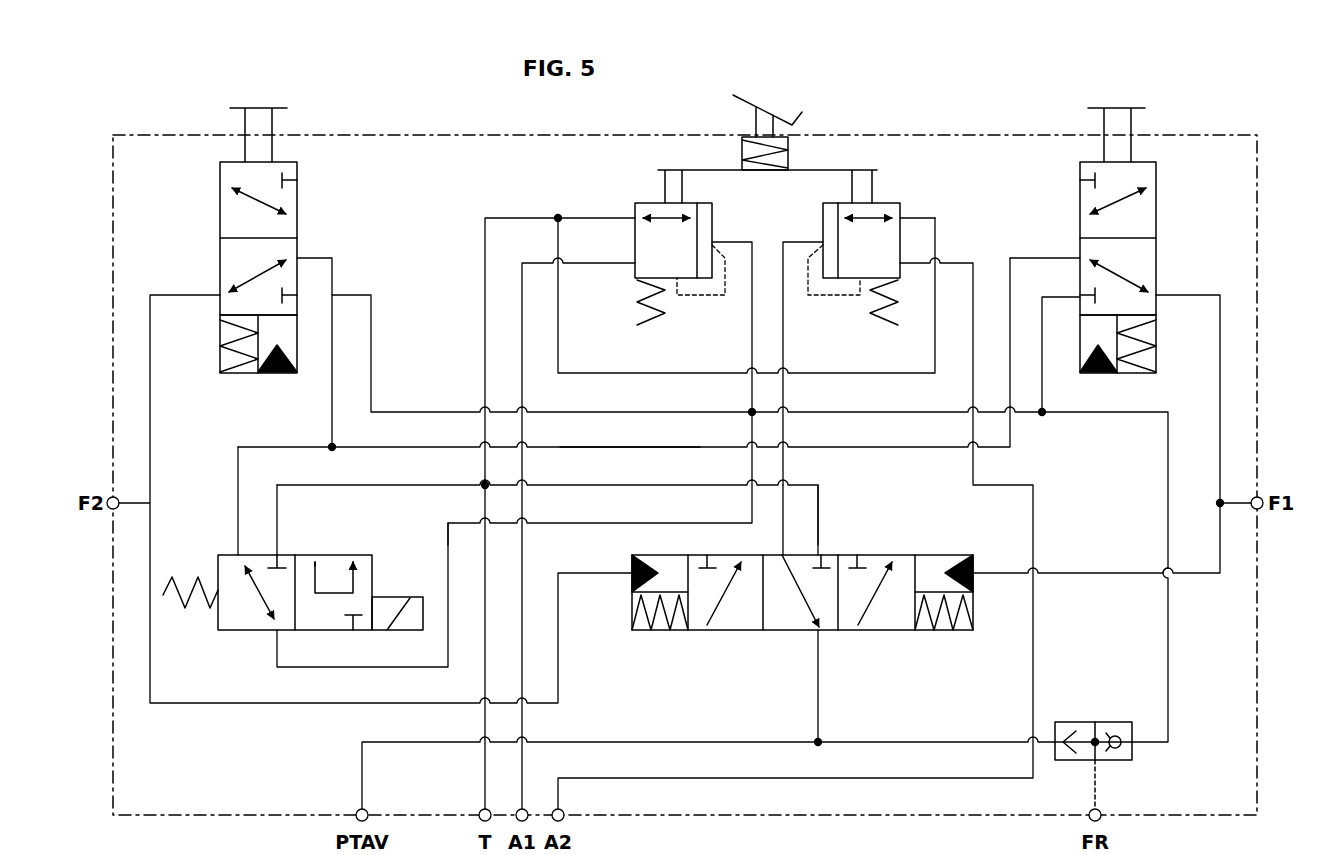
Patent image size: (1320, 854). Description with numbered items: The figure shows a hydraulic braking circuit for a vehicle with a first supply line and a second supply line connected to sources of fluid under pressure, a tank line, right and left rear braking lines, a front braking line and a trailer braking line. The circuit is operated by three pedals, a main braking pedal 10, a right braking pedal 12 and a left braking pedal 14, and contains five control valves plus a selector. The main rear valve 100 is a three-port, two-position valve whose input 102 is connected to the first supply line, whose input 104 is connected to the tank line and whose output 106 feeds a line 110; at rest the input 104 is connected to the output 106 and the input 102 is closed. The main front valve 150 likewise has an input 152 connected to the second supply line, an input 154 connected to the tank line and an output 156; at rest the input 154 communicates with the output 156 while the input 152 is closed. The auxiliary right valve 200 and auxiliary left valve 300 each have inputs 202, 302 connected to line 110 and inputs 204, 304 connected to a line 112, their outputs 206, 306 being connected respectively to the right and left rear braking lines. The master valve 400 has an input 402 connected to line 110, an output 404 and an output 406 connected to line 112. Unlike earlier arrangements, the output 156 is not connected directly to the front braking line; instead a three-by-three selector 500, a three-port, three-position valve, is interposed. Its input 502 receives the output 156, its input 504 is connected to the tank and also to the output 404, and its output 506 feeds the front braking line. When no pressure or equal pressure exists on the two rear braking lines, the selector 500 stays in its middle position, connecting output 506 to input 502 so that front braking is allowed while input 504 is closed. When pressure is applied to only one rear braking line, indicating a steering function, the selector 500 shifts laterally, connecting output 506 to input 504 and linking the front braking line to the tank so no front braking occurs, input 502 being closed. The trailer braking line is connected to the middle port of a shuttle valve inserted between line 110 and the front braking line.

The main braking pedal 10 is at (764, 88).
The right braking pedal 12 is at (1118, 88).
The left braking pedal 14 is at (258, 88).
The main rear valve 100 is at (615, 185).
The input of main rear valve 102 is at (612, 272).
The input of main rear valve 104 is at (618, 216).
The output of main rear valve 106 is at (731, 241).
The line 110 is at (617, 447).
The line 112 is at (617, 485).
The main front valve 150 is at (918, 187).
The input of main front valve 152 is at (958, 263).
The input of main front valve 154 is at (918, 217).
The output of main front valve 156 is at (801, 241).
The auxiliary right valve 200 is at (1187, 237).
The input of auxiliary right valve 202 is at (1062, 299).
The input of auxiliary right valve 204 is at (1049, 257).
The output of auxiliary right valve 206 is at (1186, 295).
The auxiliary left valve 300 is at (194, 236).
The input of auxiliary left valve 302 is at (362, 295).
The input of auxiliary left valve 304 is at (318, 257).
The output of auxiliary left valve 306 is at (206, 295).
The master valve 400 is at (397, 542).
The input of master valve 402 is at (273, 650).
The output of master valve 404 is at (279, 537).
The output of master valve 406 is at (238, 536).
The 3/3 selector 500 is at (875, 509).
The input of 3/3 selector 502 is at (783, 539).
The input of 3/3 selector 504 is at (820, 539).
The output of 3/3 selector 506 is at (817, 649).